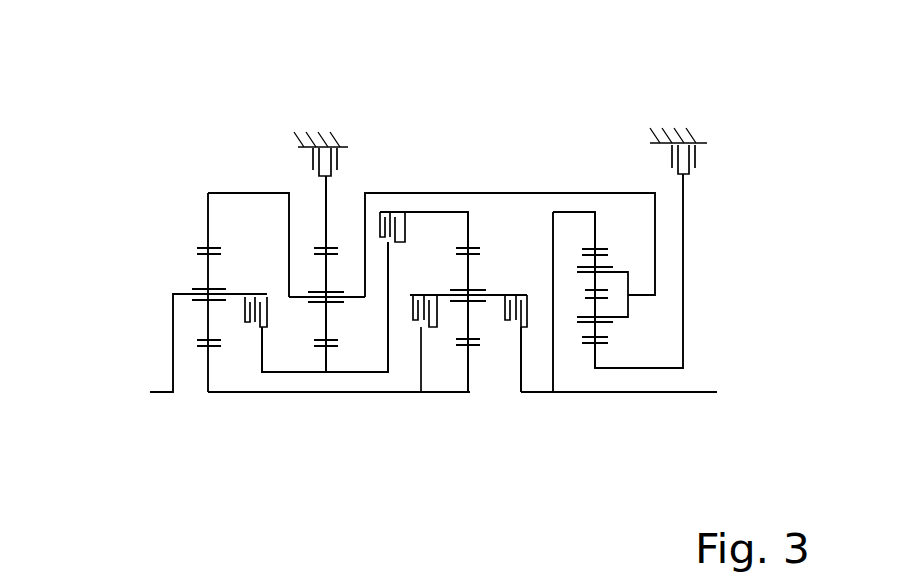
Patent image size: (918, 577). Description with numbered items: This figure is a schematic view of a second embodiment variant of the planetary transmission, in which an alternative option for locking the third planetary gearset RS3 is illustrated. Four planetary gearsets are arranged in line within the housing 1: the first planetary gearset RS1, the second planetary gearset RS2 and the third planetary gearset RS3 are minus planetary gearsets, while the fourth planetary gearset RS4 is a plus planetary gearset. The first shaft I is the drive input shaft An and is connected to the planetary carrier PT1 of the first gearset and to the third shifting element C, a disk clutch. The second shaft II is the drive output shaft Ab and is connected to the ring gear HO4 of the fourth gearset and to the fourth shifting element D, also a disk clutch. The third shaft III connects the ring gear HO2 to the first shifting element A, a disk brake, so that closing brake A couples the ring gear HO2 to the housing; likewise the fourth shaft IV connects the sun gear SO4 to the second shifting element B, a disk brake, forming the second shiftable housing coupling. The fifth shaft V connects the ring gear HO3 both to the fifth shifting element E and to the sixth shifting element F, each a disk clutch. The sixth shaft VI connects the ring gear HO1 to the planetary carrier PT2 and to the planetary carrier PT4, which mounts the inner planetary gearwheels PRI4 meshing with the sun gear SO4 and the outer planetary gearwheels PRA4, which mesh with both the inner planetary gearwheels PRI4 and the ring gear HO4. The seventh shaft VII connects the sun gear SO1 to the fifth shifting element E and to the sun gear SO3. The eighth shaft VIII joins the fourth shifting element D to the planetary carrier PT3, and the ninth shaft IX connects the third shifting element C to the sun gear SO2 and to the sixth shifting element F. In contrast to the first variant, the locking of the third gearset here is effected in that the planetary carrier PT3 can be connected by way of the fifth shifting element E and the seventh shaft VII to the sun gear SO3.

The housing 1 is at (308, 127).
The first shaft I is at (173, 322).
The second shaft II is at (667, 390).
The third shaft III is at (323, 213).
The fourth shaft IV is at (685, 262).
The fifth shaft V is at (450, 212).
The sixth shaft VI is at (57, 108).
The seventh shaft VII is at (396, 395).
The eighth shaft VIII is at (490, 300).
The ninth shaft IX is at (355, 375).
The first planetary gearset RS1 is at (208, 190).
The second planetary gearset RS2 is at (325, 118).
The third planetary gearset RS3 is at (468, 186).
The fourth planetary gearset RS4 is at (595, 183).
The ring gear of the first planetary gearset HO1 is at (202, 248).
The ring gear of the second planetary gearset HO2 is at (333, 247).
The ring gear of the third planetary gearset HO3 is at (477, 248).
The ring gear of the fourth planetary gearset HO4 is at (603, 248).
The sun gear of the first planetary gearset SO1 is at (203, 348).
The sun gear of the second planetary gearset SO2 is at (322, 348).
The sun gear of the third planetary gearset SO3 is at (480, 353).
The sun gear of the fourth planetary gearset SO4 is at (608, 340).
The planetary carrier of the first planetary gearset PT1 is at (178, 291).
The planetary carrier of the second planetary gearset PT2 is at (298, 298).
The planetary carrier of the third planetary gearset PT3 is at (452, 300).
The planetary carrier of the fourth planetary gearset PT4 is at (630, 305).
The outer planetary gearwheels PRA4 is at (607, 257).
The inner planetary gearwheels PRI4 is at (592, 329).
The first shifting element A is at (323, 162).
The second shifting element B is at (679, 159).
The third shifting element C is at (256, 319).
The fourth shifting element D is at (516, 329).
The fifth shifting element E is at (425, 329).
The sixth shifting element F is at (392, 292).
The drive input shaft An is at (148, 411).
The drive output shaft Ab is at (703, 406).